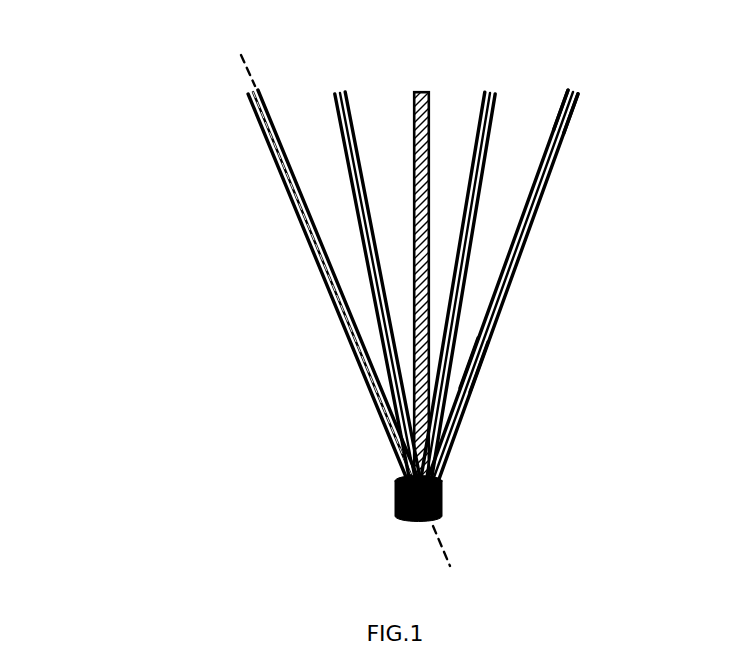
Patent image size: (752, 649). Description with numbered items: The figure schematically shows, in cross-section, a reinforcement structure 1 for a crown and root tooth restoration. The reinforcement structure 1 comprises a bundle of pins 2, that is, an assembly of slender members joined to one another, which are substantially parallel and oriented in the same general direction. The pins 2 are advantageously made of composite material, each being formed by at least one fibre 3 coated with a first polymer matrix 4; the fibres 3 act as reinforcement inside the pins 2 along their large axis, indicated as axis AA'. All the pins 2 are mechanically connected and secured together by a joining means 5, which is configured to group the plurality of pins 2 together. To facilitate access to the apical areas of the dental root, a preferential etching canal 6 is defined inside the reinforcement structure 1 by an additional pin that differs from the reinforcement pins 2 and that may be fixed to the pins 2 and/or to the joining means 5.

The reinforcement structure 1 is at (371, 295).
The pins 2 is at (513, 297).
The fibre 3 is at (575, 92).
The first polymer matrix 4 is at (481, 367).
The joining means 5 is at (441, 500).
The preferential etching canal 6 is at (422, 91).